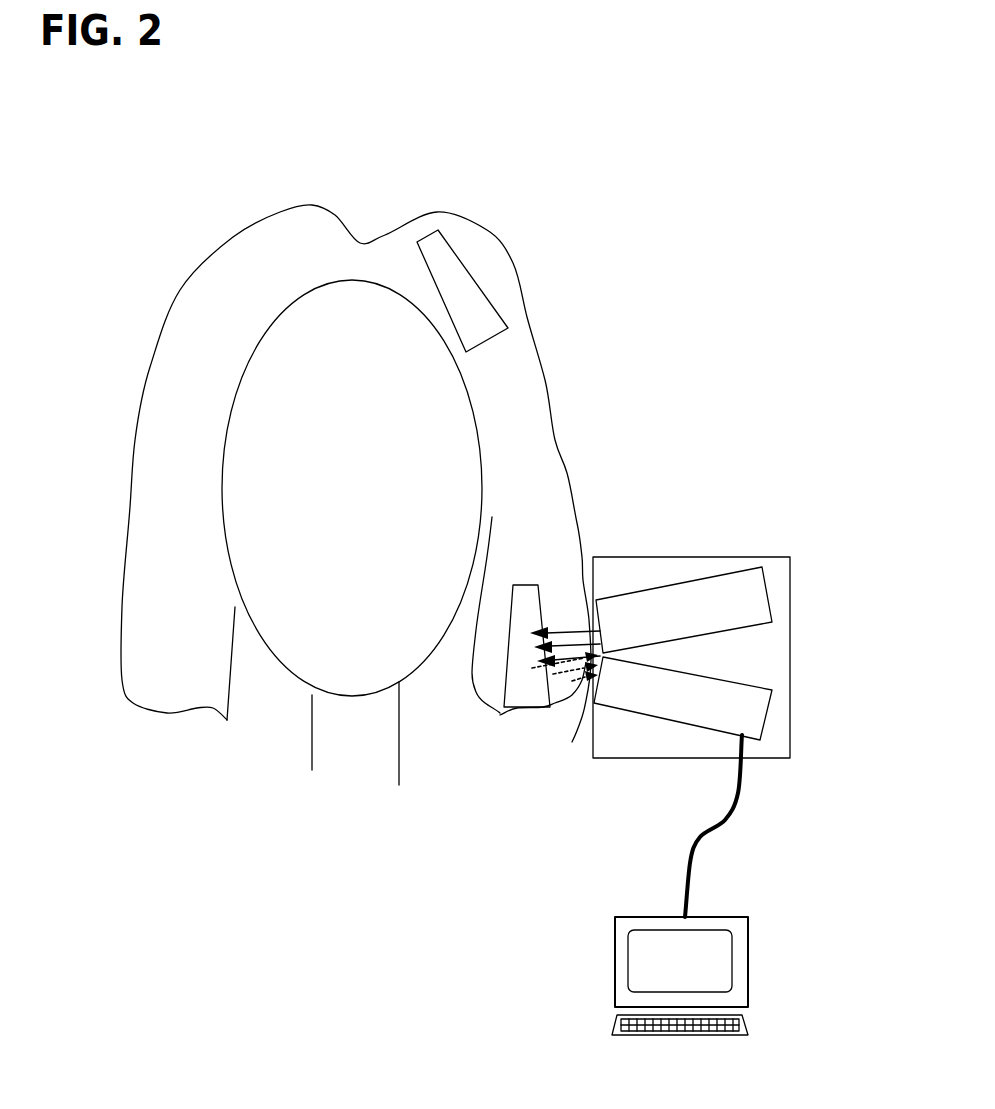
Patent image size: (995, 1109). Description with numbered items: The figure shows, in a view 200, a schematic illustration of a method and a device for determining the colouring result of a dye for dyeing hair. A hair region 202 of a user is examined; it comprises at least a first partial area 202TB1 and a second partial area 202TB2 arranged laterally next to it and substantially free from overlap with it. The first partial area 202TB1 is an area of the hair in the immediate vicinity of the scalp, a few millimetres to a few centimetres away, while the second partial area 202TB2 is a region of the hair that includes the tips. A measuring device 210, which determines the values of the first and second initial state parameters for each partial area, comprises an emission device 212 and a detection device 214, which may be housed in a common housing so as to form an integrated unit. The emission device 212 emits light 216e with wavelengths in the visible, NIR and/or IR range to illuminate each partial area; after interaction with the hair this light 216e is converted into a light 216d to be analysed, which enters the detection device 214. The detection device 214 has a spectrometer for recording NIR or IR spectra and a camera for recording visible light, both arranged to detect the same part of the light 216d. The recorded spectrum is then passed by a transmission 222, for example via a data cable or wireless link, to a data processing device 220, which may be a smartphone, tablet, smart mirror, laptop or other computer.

The view 200 is at (725, 123).
The hair region 202 is at (175, 330).
The first partial area 202TB1 is at (490, 320).
The second partial area 202TB2 is at (517, 683).
The measuring device 210 is at (773, 577).
The emission device 212 is at (653, 610).
The detection device 214 is at (675, 710).
The emitted light 216e is at (577, 567).
The light to be analysed 216d is at (583, 717).
The data processing device 220 is at (613, 960).
The transmission 222 is at (697, 863).